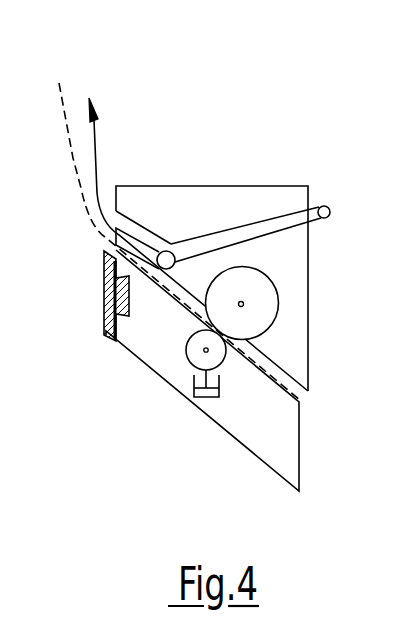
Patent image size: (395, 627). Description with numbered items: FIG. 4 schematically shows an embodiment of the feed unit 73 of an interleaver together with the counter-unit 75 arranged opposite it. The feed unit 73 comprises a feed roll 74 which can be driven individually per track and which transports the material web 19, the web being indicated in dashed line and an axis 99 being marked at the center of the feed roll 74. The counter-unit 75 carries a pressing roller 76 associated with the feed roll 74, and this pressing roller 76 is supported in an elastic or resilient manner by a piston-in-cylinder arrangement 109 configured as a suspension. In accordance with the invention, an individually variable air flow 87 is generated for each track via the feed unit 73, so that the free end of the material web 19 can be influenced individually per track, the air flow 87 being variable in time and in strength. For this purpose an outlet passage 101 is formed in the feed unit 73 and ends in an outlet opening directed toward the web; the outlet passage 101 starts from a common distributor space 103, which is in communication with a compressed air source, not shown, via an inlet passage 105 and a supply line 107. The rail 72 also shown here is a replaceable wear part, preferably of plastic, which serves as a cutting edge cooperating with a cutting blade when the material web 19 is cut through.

The material web 19 is at (60, 101).
The air flow 87 is at (97, 147).
The feed unit 73 is at (243, 205).
The outlet passage 101 is at (128, 227).
The distributor space 103 is at (168, 253).
The inlet passage 105 is at (257, 232).
The supply line 107 is at (325, 209).
The roller axis 99 is at (243, 305).
The feed roll 74 is at (249, 322).
The rail 72 is at (103, 317).
The counter-unit 75 is at (137, 348).
The pressing roller 76 is at (195, 360).
The piston-in-cylinder arrangement 109 is at (207, 400).